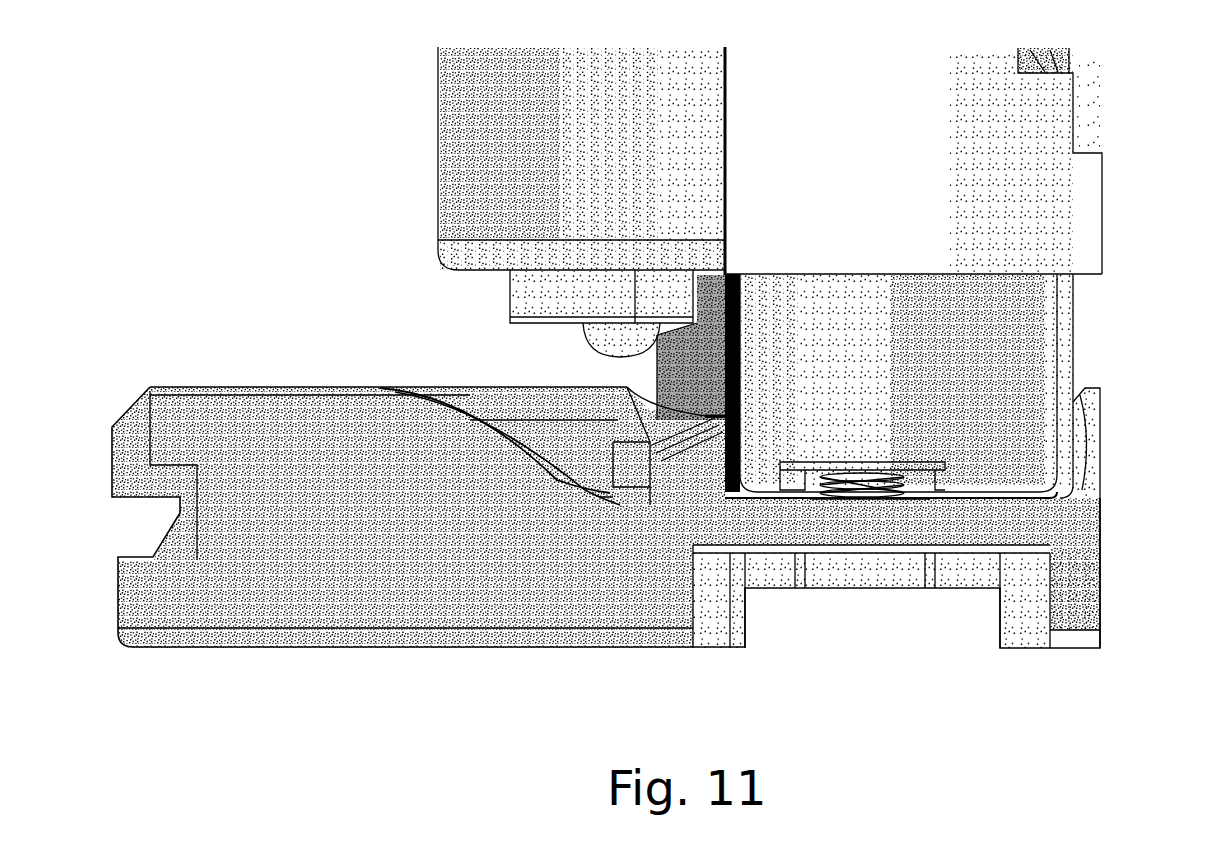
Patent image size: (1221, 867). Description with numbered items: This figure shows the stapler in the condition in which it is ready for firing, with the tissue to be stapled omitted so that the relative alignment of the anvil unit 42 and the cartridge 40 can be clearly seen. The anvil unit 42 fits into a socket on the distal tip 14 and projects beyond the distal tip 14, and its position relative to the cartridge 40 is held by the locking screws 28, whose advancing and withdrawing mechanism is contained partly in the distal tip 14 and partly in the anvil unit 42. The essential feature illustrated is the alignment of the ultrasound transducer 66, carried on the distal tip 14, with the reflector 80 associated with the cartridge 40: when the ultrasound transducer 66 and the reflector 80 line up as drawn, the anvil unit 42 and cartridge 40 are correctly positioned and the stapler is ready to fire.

The distal tip 14 is at (1037, 138).
The locking screws 28 is at (866, 492).
The cartridge 40 is at (346, 593).
The anvil unit 42 is at (1028, 366).
The ultrasound transducer 66 is at (610, 337).
The reflector 80 is at (628, 492).